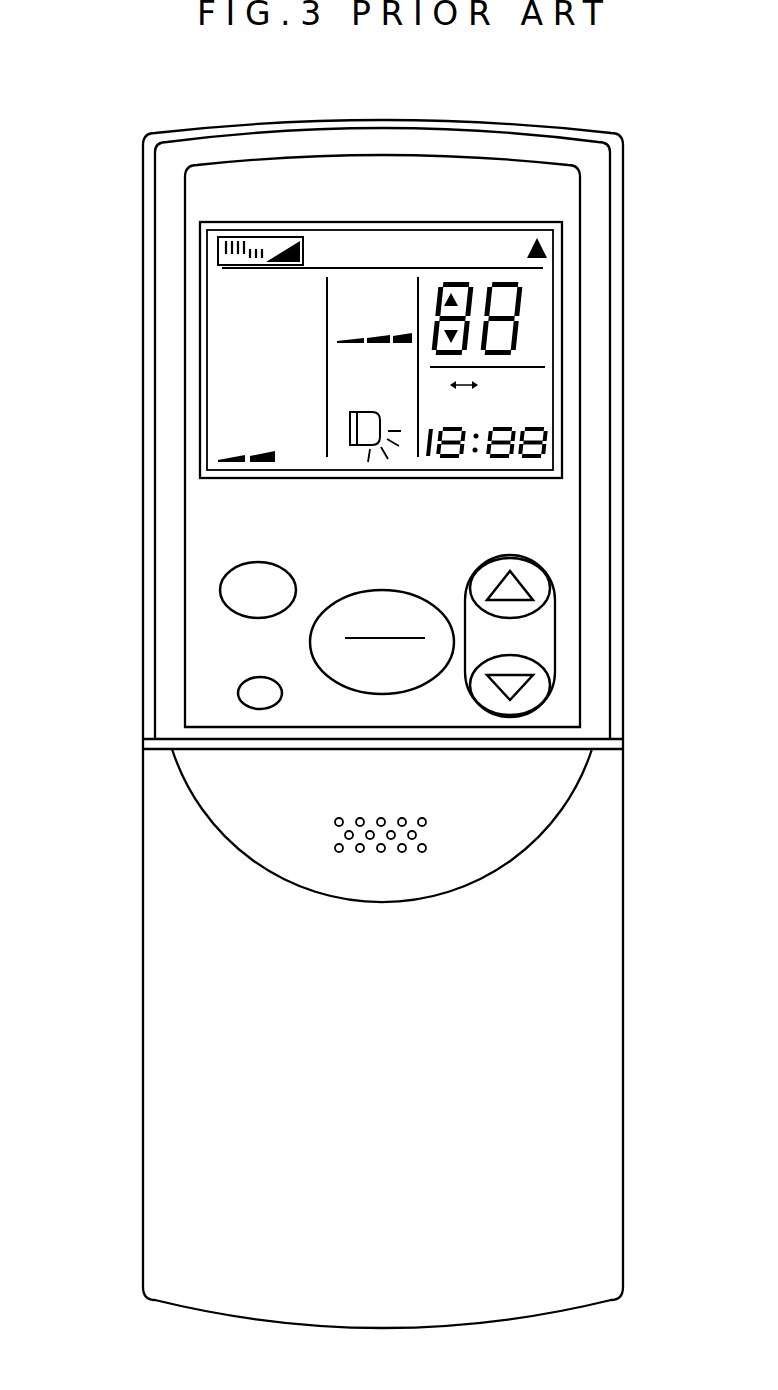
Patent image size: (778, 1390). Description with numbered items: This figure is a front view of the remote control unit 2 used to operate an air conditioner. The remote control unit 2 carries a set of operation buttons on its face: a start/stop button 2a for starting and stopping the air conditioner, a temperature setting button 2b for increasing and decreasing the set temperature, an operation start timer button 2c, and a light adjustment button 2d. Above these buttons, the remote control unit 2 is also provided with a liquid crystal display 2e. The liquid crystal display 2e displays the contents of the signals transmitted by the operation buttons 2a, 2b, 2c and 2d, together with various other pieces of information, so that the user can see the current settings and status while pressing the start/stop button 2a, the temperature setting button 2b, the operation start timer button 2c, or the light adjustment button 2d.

The remote control unit 2 is at (622, 133).
The start/stop button 2a is at (357, 592).
The temperature setting button 2b is at (548, 670).
The operation start timer button 2c is at (232, 594).
The light adjustment button 2d is at (240, 698).
The liquid crystal display 2e is at (215, 312).